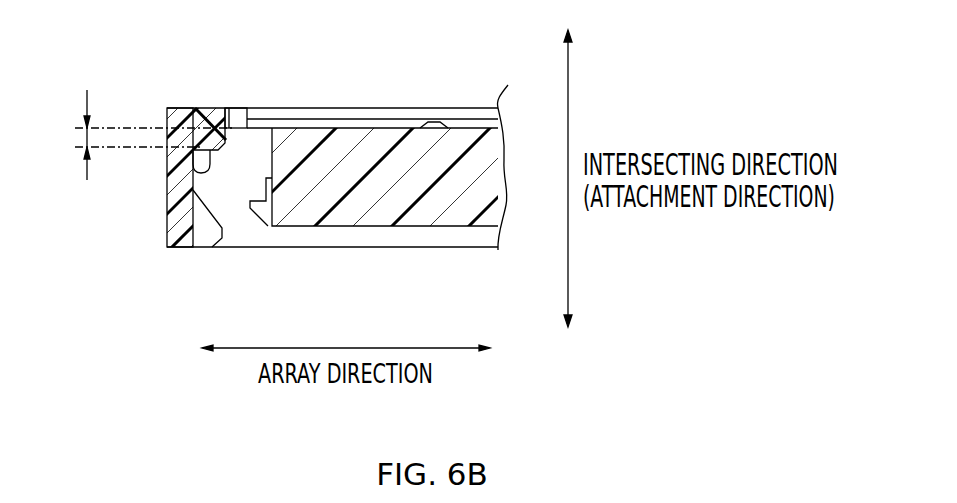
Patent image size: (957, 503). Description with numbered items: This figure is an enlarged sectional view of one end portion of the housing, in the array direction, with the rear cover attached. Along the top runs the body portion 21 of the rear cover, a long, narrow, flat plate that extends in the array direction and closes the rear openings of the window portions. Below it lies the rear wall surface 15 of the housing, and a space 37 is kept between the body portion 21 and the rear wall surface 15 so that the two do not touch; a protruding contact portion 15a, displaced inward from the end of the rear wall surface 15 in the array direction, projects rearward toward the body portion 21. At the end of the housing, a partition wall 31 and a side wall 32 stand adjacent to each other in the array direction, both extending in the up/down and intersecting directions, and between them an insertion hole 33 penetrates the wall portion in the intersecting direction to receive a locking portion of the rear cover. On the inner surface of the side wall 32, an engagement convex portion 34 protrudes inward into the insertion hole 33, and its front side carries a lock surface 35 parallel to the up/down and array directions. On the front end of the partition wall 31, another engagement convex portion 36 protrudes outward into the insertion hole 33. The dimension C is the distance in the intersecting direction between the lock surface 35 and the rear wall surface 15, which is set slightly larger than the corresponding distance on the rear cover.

The rear wall surface 15 is at (377, 128).
The protruding contact portion 15a is at (434, 122).
The body portion 21 is at (483, 108).
The partition wall 31 is at (270, 167).
The side wall 32 is at (165, 210).
The insertion hole 33 is at (225, 202).
The engagement convex portion 34 is at (223, 108).
The lock surface 35 is at (200, 154).
The engagement convex portion 36 is at (260, 223).
The space 37 is at (313, 119).
The dimension C is at (146, 135).